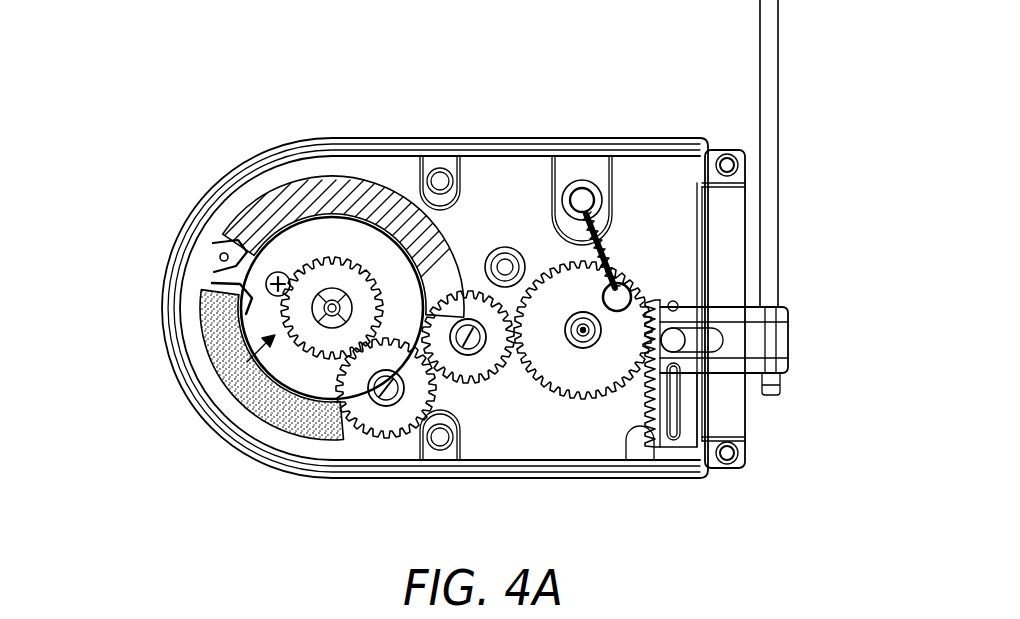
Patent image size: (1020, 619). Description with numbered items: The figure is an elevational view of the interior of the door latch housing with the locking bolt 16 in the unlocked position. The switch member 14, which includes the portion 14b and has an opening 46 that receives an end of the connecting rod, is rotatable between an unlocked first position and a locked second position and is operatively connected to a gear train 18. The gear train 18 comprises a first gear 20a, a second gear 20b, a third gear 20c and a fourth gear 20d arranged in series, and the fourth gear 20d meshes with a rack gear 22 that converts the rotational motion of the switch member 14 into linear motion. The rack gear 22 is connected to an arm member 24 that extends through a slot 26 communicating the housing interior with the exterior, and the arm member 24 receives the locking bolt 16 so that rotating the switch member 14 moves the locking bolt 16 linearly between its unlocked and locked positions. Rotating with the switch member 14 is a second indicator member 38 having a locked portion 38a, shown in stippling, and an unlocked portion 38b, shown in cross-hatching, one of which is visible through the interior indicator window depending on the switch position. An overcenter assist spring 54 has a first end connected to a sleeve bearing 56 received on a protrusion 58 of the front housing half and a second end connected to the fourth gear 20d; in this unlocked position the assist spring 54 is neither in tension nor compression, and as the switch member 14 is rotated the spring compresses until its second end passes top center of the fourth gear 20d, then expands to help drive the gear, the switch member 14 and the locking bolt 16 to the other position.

The switch member 14 is at (263, 318).
The mounting tab 14b is at (205, 268).
The locking bolt 16 is at (780, 62).
The gear train 18 is at (217, 367).
The first gear 20a is at (337, 262).
The second gear 20b is at (393, 428).
The third gear 20c is at (483, 365).
The fourth gear 20d is at (597, 363).
The rack gear 22 is at (643, 433).
The arm member 24 is at (780, 342).
The slot 26 is at (735, 250).
The second indicator member 38 is at (480, 293).
The locked portion 38a is at (253, 397).
The unlocked portion 38b is at (313, 182).
The opening 46 is at (214, 266).
The overcenter assist spring 54 is at (608, 232).
The sleeve bearing 56 is at (592, 183).
The protrusion 58 is at (583, 200).